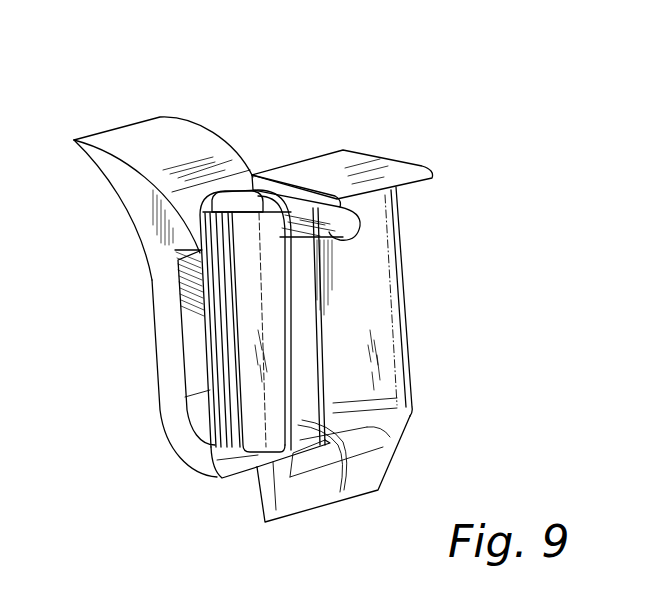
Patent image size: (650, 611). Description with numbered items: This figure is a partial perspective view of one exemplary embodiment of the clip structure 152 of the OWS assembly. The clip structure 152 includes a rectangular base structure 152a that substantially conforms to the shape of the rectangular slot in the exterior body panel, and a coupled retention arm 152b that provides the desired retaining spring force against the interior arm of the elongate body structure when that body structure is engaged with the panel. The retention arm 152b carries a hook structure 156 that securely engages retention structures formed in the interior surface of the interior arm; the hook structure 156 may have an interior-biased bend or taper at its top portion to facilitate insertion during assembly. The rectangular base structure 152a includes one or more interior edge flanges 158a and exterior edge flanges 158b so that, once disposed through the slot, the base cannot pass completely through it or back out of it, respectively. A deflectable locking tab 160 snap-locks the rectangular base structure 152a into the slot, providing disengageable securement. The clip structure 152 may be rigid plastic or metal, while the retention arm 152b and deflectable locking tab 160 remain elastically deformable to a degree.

The clip structure 152 is at (309, 117).
The rectangular base structure 152a is at (410, 288).
The retention arm 152b is at (155, 340).
The hook structure 156 is at (183, 130).
The interior edge flange 158a is at (217, 450).
The exterior edge flange 158b is at (313, 513).
The deflectable locking tab 160 is at (380, 177).